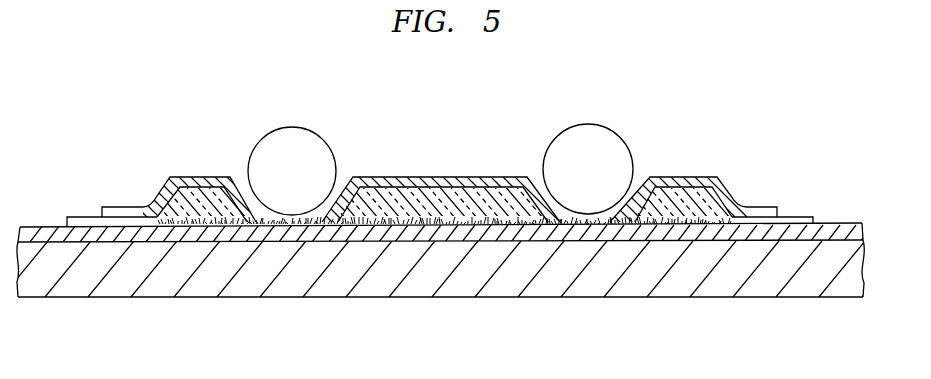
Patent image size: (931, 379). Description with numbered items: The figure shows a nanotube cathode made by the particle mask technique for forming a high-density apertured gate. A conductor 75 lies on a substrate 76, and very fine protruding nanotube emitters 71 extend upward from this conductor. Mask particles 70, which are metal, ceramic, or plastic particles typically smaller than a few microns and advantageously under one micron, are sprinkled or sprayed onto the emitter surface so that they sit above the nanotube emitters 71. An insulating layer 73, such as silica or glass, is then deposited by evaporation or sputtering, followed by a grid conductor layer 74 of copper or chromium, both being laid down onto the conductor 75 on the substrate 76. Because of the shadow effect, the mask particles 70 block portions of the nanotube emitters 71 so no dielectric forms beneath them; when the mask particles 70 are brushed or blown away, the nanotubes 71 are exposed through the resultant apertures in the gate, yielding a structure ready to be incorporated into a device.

The mask particles 70 is at (310, 138).
The nanotube emitters 71 is at (193, 213).
The insulating layer 73 is at (73, 216).
The grid conductor layer 74 is at (118, 206).
The conductor 75 is at (30, 225).
The substrate 76 is at (72, 298).